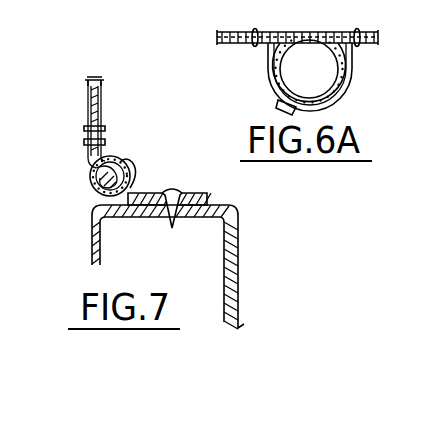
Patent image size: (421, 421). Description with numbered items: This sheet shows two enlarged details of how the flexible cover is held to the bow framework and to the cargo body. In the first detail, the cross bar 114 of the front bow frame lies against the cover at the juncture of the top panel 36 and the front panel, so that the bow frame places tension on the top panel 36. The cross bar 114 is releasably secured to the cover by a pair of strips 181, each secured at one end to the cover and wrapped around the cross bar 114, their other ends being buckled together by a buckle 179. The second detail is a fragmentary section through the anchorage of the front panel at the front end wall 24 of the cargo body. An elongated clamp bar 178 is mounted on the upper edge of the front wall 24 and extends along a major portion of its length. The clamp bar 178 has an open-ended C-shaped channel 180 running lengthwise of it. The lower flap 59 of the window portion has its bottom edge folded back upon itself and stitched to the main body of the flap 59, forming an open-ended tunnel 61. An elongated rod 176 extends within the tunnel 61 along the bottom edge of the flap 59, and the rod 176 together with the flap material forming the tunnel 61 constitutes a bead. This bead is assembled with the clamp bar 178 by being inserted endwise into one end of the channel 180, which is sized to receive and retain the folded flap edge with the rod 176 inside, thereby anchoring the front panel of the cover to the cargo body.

In FIG. 7, the front end wall 24 is at (92, 230).
In FIG. 6A, the top panel 36 is at (335, 32).
In FIG. 7, the lower flap 59 is at (86, 82).
In FIG. 7, the tunnel 61 is at (87, 166).
In FIG. 6A, the cross bar 114 is at (303, 53).
In FIG. 7, the elongated rod 176 is at (122, 163).
In FIG. 7, the clamp bar 178 is at (135, 190).
In FIG. 6A, the buckle 179 is at (343, 102).
In FIG. 7, the C-shaped channel 180 is at (114, 154).
In FIG. 6A, the strips 181 is at (268, 64).